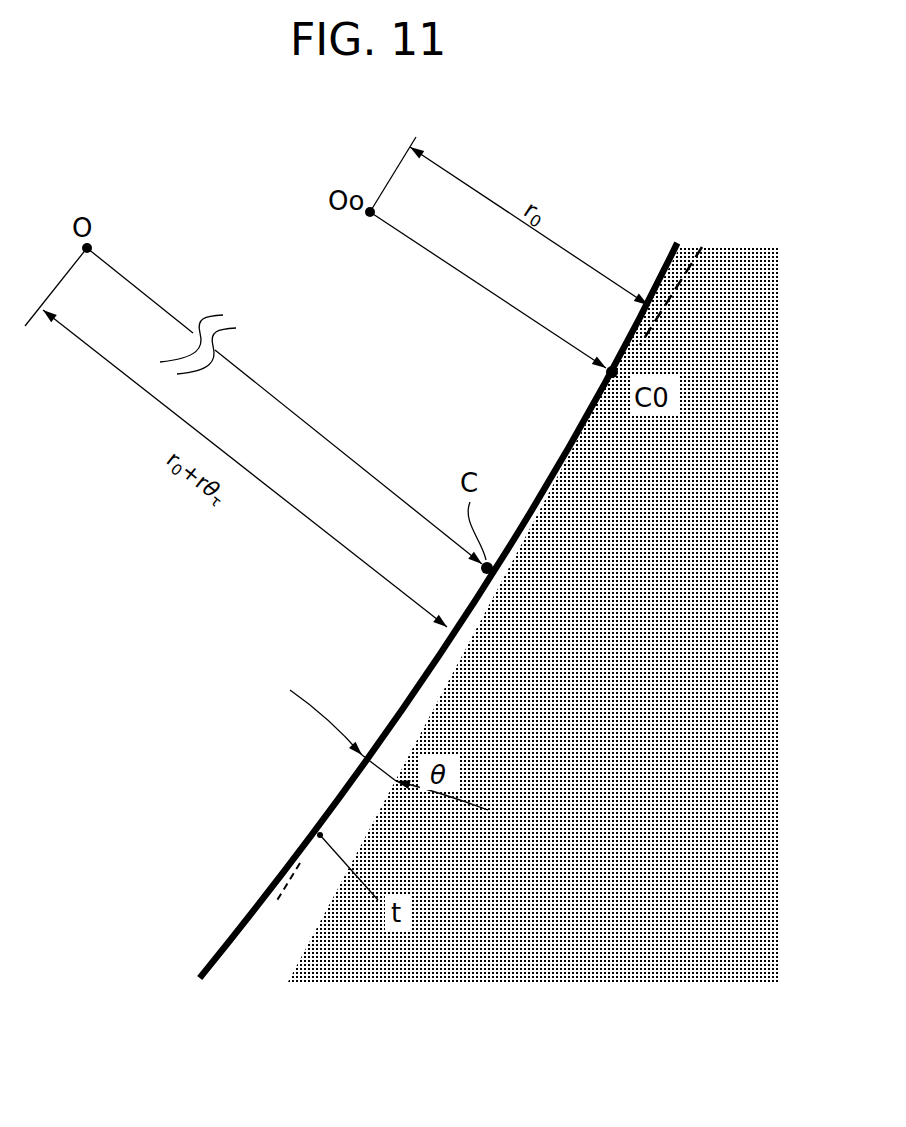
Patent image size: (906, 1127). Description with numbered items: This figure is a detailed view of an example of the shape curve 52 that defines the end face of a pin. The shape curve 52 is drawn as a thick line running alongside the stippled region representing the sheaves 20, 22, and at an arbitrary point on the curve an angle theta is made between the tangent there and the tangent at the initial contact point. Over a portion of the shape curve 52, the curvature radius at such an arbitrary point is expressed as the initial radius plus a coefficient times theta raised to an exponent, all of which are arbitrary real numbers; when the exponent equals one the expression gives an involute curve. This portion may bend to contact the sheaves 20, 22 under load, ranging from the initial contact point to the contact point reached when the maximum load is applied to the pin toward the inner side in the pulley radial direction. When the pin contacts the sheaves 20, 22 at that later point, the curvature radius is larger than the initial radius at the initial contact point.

The sheave 20 is at (662, 578).
The sheave 22 is at (712, 578).
The shape curve 52 is at (278, 874).